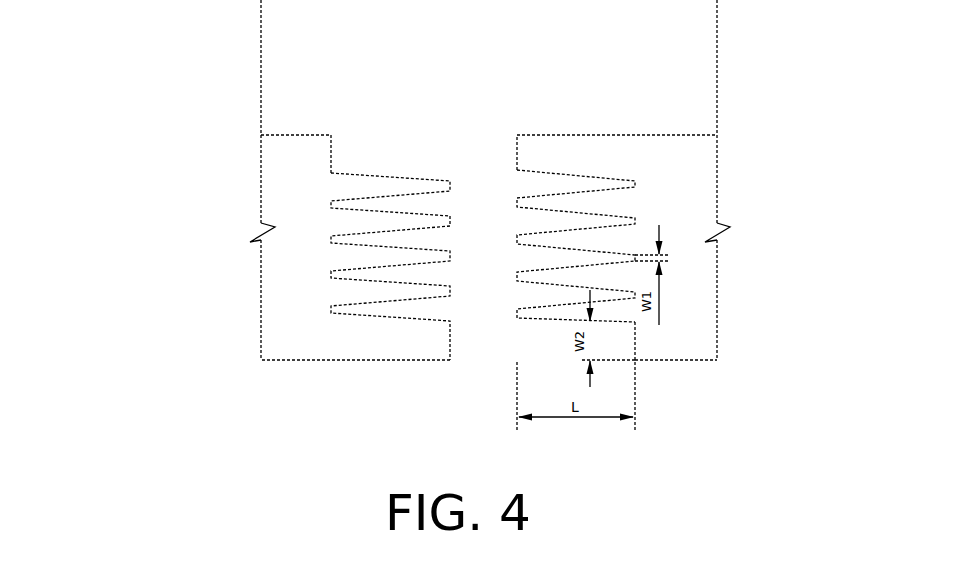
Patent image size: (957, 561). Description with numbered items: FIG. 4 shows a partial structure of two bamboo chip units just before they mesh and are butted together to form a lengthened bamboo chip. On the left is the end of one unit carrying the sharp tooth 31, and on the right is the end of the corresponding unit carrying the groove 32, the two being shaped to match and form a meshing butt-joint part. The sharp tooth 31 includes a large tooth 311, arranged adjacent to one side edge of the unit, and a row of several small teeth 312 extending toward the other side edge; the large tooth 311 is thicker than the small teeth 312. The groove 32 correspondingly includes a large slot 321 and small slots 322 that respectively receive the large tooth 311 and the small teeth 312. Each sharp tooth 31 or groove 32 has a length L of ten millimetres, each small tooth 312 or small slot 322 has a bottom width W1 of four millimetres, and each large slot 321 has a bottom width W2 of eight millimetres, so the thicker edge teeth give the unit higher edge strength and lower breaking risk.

The sharp tooth 31 is at (118, 263).
The large tooth 311 is at (402, 350).
The small tooth 312 is at (388, 260).
The groove 32 is at (817, 162).
The large slot 321 is at (617, 343).
The small slot 322 is at (560, 290).